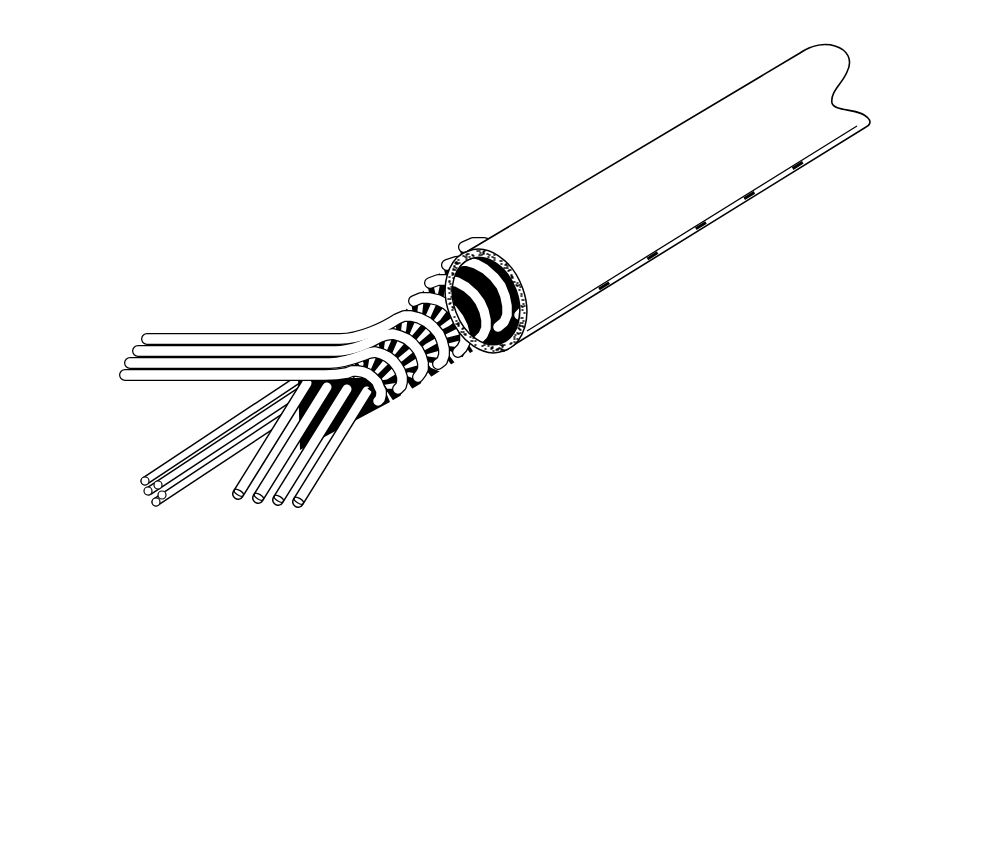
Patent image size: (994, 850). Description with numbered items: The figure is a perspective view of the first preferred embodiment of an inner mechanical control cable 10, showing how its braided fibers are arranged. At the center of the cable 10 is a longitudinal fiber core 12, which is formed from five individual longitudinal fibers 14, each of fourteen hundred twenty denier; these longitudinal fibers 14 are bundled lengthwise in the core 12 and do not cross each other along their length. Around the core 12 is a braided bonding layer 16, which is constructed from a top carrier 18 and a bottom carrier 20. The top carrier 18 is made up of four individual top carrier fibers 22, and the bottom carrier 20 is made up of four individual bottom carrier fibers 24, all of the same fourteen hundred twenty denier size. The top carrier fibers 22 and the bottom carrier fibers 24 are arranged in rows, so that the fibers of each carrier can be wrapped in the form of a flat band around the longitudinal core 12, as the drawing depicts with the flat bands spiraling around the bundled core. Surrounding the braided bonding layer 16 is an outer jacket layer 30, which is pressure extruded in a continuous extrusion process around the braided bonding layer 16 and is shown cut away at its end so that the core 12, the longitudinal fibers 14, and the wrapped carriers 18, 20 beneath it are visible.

The inner mechanical control cable 10 is at (283, 170).
The longitudinal fiber core 12 is at (185, 450).
The longitudinal fibers 14 is at (140, 482).
The braided bonding layer 16 is at (465, 357).
The top carrier 18 is at (248, 333).
The bottom carrier 20 is at (330, 453).
The top carrier fibers 22 is at (147, 337).
The bottom carrier fibers 24 is at (237, 498).
The outer jacket layer 30 is at (723, 203).